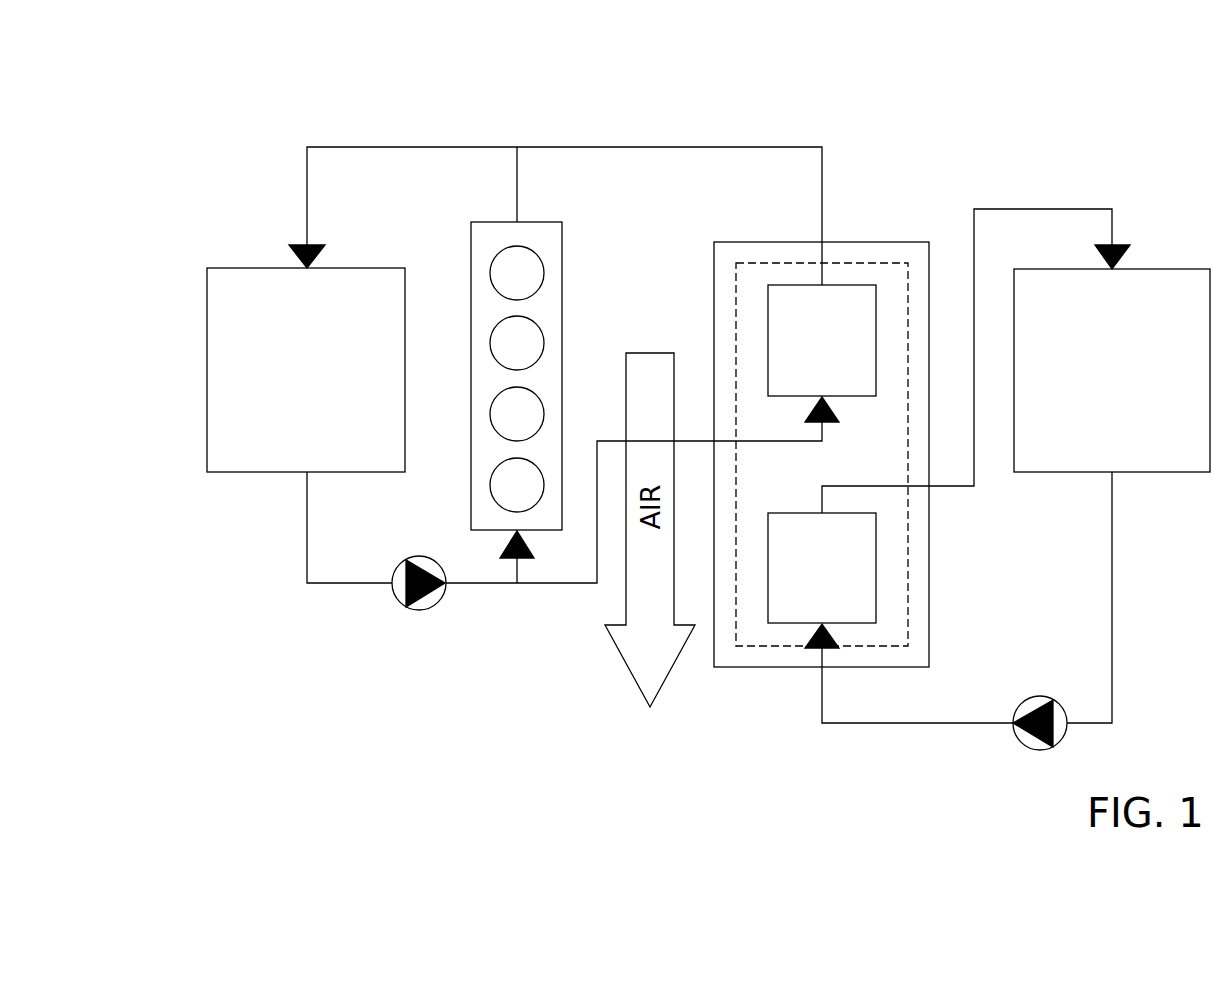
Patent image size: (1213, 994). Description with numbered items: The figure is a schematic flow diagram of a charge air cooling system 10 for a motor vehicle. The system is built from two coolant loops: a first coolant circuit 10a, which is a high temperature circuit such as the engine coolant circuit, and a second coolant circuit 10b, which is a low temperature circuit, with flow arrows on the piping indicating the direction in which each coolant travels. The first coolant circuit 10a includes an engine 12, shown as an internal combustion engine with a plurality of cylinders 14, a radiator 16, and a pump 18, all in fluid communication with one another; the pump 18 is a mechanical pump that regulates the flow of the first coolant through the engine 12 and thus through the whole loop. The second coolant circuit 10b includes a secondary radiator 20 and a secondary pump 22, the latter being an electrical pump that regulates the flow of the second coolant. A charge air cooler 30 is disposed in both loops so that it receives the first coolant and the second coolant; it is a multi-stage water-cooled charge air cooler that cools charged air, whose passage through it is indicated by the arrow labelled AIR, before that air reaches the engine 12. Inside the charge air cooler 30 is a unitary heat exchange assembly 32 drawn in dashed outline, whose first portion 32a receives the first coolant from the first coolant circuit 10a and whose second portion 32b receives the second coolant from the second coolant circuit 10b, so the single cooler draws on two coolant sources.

The charge air cooling system 10 is at (178, 64).
The first coolant circuit 10a is at (307, 591).
The second coolant circuit 10b is at (1119, 631).
The engine 12 is at (547, 232).
The cylinders 14 is at (517, 343).
The radiator 16 is at (306, 370).
The pump 18 is at (420, 610).
The secondary radiator 20 is at (1112, 370).
The secondary pump 22 is at (1038, 750).
The charge air cooler 30 is at (854, 234).
The heat exchange assembly 32 is at (753, 290).
The first portion 32a is at (822, 340).
The second portion 32b is at (822, 568).